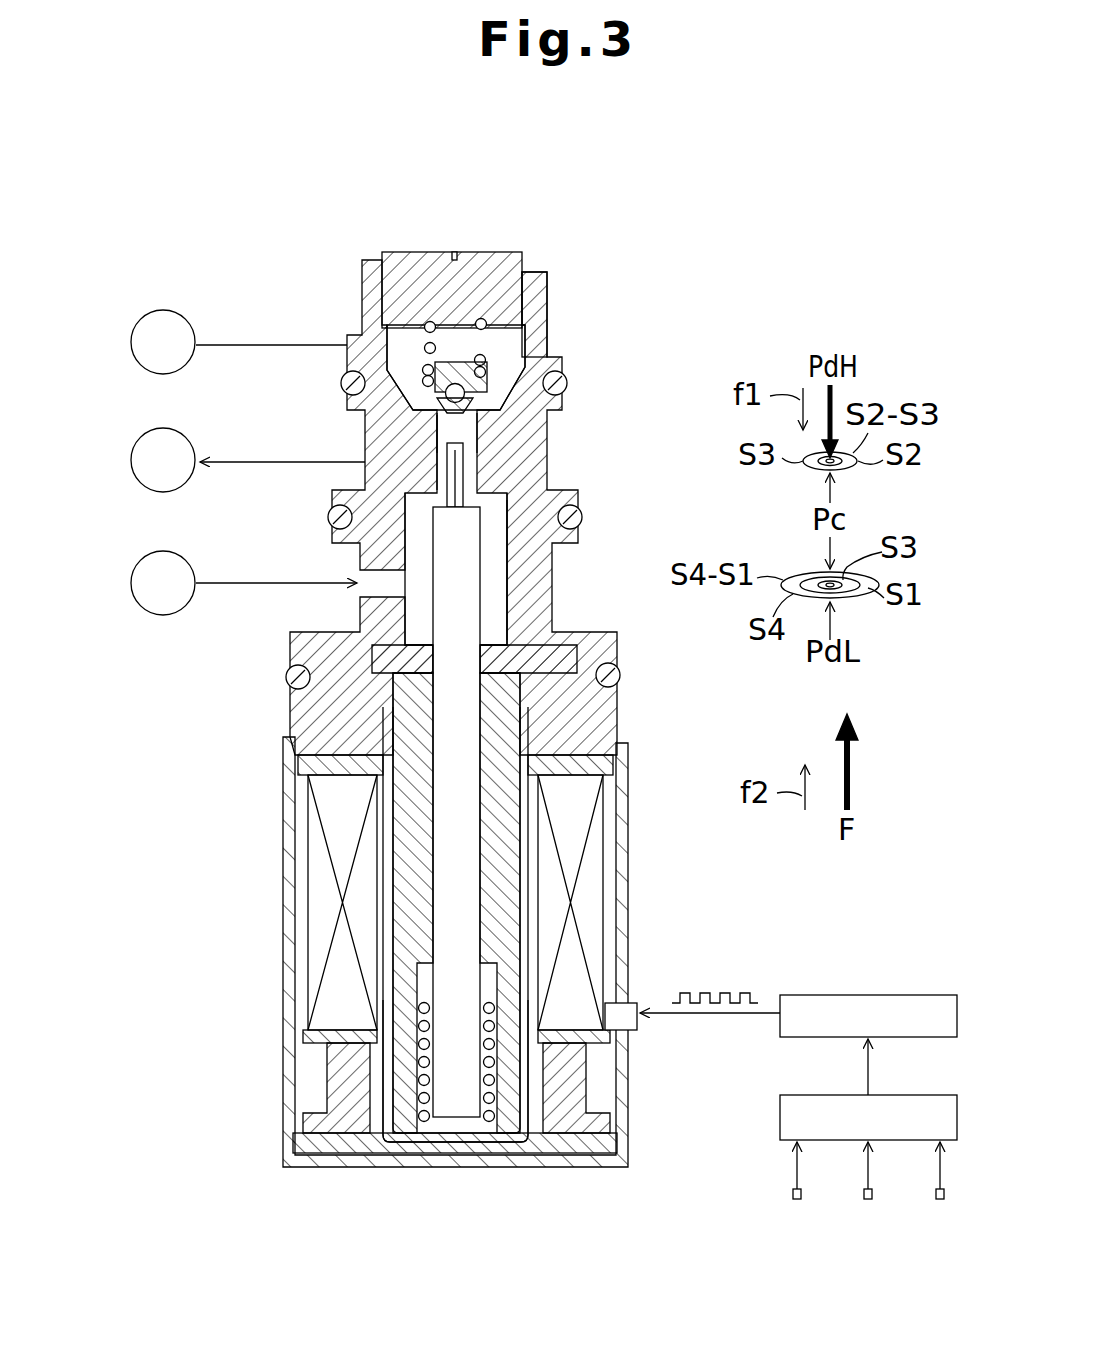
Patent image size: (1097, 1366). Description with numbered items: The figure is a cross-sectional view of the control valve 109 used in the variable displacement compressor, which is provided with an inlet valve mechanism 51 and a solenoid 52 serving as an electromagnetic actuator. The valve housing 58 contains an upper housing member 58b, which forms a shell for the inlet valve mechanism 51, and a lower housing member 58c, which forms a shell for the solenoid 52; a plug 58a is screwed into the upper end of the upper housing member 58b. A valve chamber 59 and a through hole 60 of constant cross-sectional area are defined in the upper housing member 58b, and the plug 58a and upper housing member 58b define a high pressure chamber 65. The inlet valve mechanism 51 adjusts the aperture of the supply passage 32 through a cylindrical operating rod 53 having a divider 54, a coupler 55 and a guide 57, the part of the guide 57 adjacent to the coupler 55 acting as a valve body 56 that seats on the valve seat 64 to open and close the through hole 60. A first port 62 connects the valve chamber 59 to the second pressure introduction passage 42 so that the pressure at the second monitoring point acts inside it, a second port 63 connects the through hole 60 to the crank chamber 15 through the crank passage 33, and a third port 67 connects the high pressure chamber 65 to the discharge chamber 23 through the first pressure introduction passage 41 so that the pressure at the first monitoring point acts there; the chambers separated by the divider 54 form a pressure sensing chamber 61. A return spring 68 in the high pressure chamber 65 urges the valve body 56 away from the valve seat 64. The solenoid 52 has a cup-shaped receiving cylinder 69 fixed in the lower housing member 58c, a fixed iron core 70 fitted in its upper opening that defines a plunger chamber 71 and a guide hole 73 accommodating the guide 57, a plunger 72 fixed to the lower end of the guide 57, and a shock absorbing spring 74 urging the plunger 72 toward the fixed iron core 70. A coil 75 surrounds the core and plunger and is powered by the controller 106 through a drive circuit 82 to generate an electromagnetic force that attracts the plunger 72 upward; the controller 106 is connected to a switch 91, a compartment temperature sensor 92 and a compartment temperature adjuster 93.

The control valve 109 is at (548, 256).
The valve housing 58 is at (402, 672).
The plug 58a is at (497, 255).
The upper housing member 58b is at (548, 312).
The lower housing member 58c is at (290, 748).
The inlet valve mechanism 51 is at (549, 340).
The pressure sensing chamber 61 is at (405, 330).
The high pressure chamber 65 is at (393, 368).
The return spring 68 is at (513, 315).
The valve seat 64 is at (487, 477).
The divider 54 is at (467, 432).
The coupler 55 is at (480, 465).
The through hole 60 is at (455, 490).
The valve body 56 is at (467, 522).
The valve chamber 59 is at (493, 587).
The operating rod 53 is at (477, 660).
The fixed iron core 70 is at (503, 667).
The guide 57 is at (445, 835).
The guide hole 73 is at (478, 865).
The receiving cylinder 69 is at (522, 835).
The plunger chamber 71 is at (403, 1130).
The shock absorbing spring 74 is at (418, 1130).
The coil 75 is at (342, 983).
The solenoid 52 is at (283, 946).
The plunger 72 is at (510, 1113).
The third port 67 is at (362, 340).
The second port 63 is at (366, 453).
The first port 62 is at (357, 590).
The discharge chamber 23 is at (174, 323).
The first pressure introduction passage 41 is at (137, 318).
The crank chamber 15 is at (186, 477).
The supply passage 32 is at (147, 436).
The crank passage 33 is at (186, 477).
The second pressure introduction passage 42 is at (191, 594).
The drive circuit 82 is at (934, 995).
The controller 106 is at (780, 1117).
The switch 91 is at (797, 1199).
The compartment temperature sensor 92 is at (868, 1199).
The compartment temperature adjuster 93 is at (940, 1199).